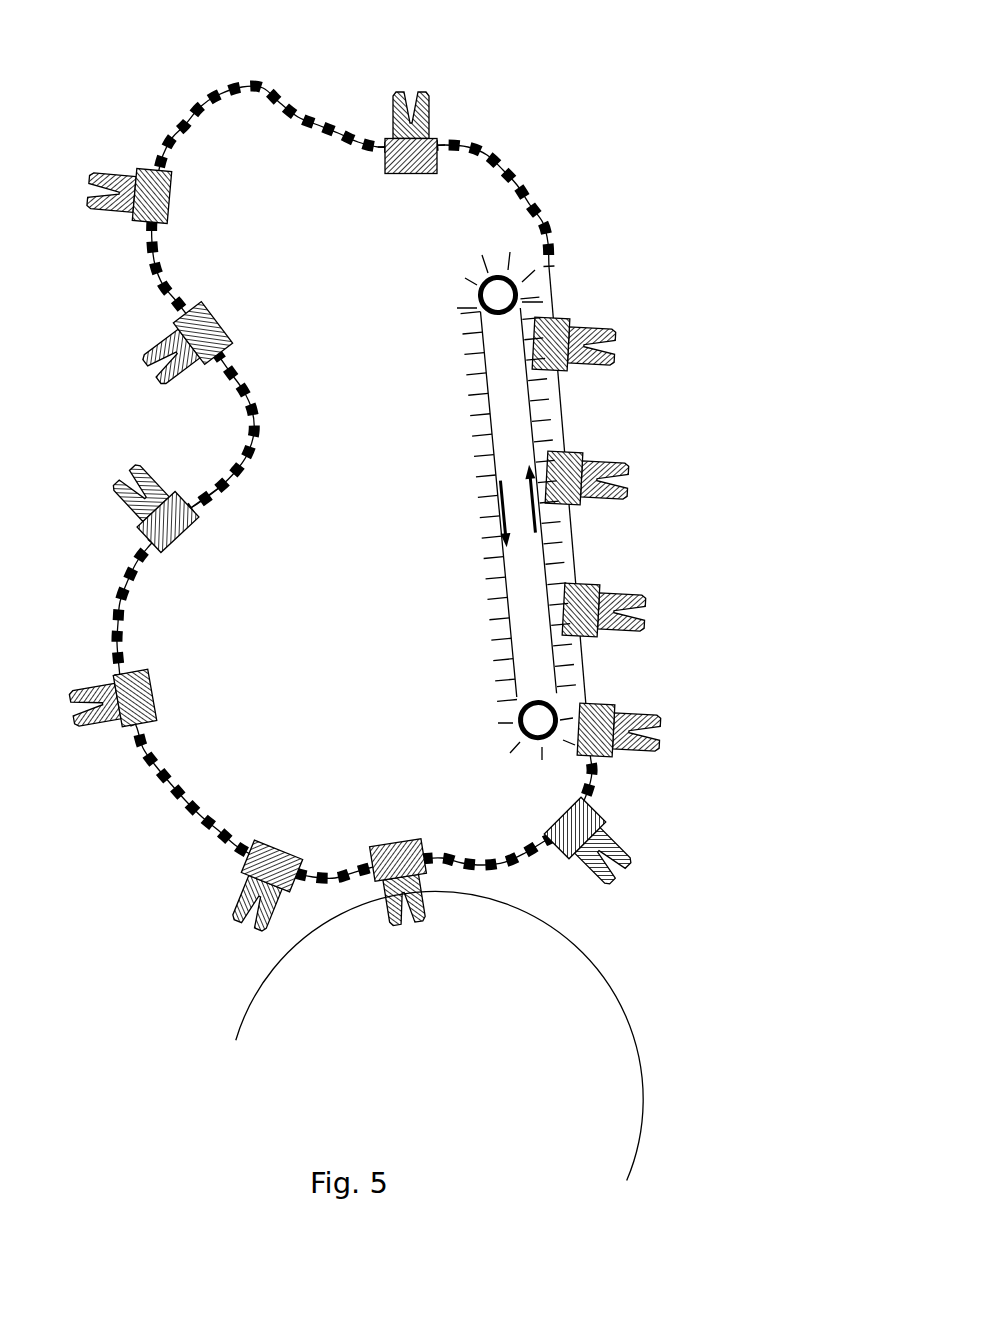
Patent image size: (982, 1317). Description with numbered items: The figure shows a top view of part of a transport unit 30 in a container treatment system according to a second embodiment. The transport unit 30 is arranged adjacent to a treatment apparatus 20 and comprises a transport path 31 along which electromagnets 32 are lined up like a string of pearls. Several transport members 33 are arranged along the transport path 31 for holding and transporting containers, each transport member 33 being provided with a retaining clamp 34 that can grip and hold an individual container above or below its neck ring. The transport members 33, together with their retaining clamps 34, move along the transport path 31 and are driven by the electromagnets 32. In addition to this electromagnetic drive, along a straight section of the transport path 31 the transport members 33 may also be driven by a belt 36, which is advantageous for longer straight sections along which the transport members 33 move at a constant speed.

The second treatment apparatus 20 is at (240, 1017).
The transport unit 30 is at (100, 73).
The transport path 31 is at (389, 506).
The electromagnets 32 is at (533, 205).
The transport members 33 is at (383, 164).
The retaining clamp 34 is at (433, 112).
The belt 36 is at (533, 395).